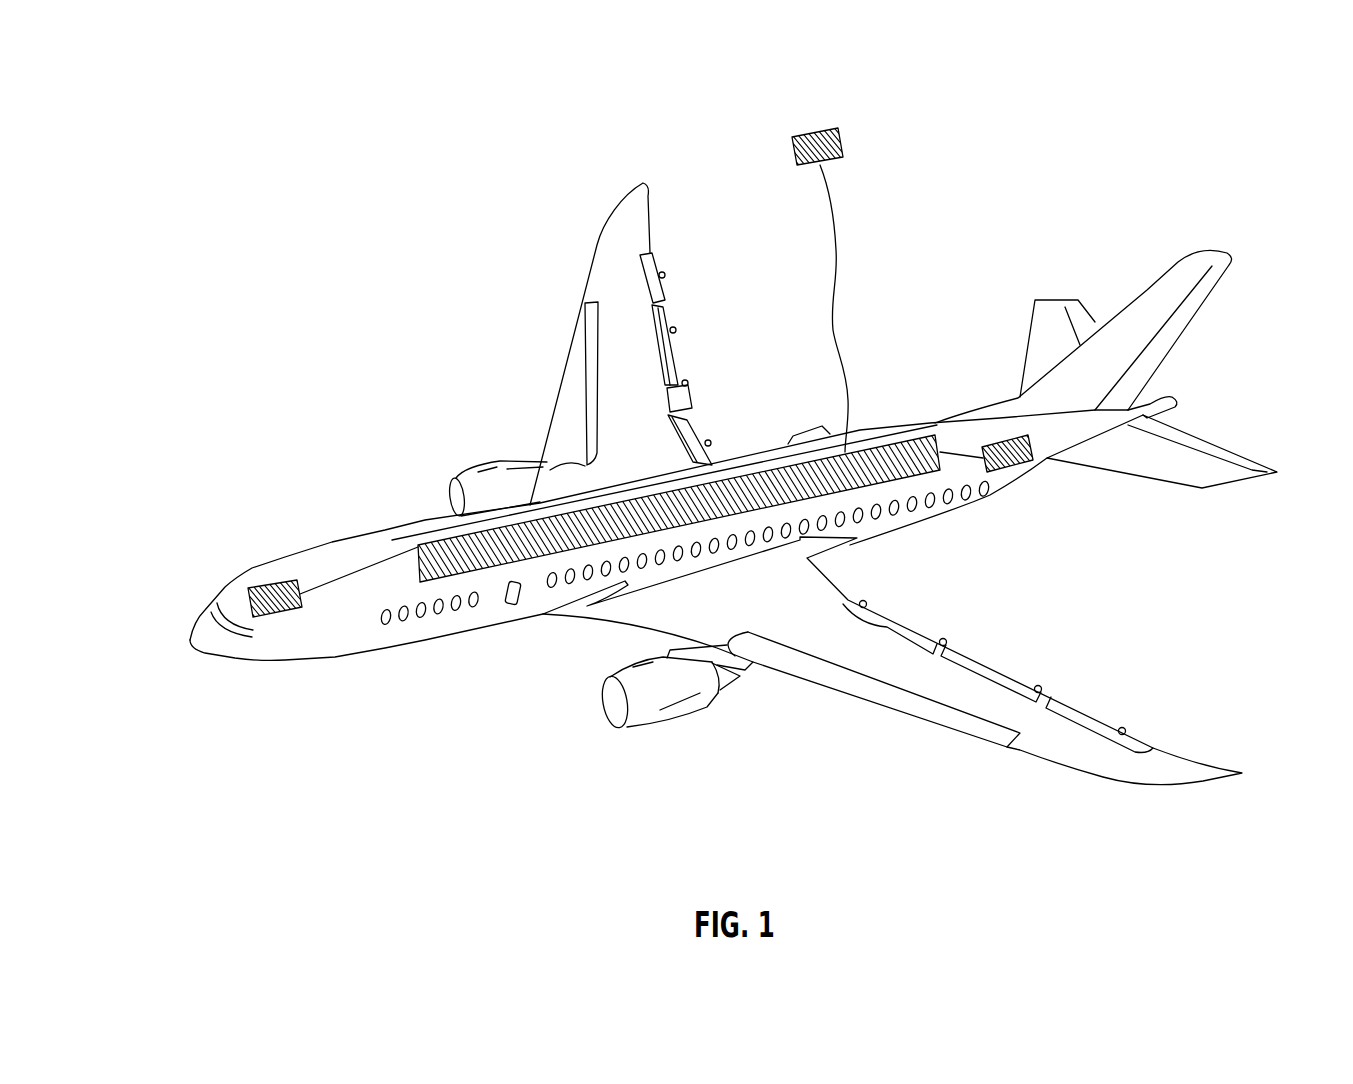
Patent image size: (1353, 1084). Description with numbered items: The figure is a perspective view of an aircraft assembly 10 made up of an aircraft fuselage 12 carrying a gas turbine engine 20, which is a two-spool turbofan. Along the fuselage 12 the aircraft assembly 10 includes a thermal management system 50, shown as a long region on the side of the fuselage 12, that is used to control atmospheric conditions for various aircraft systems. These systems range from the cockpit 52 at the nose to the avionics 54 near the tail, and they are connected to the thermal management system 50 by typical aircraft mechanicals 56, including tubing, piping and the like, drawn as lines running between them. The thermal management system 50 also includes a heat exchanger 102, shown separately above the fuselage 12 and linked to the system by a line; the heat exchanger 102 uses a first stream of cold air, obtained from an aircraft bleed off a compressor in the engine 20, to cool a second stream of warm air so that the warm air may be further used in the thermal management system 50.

The aircraft assembly 10 is at (190, 92).
The aircraft fuselage 12 is at (418, 525).
The gas turbine engine 20 is at (656, 712).
The thermal management system 50 is at (895, 440).
The cockpit 52 is at (250, 585).
The avionics 54 is at (1023, 471).
The aircraft mechanicals 56 is at (332, 543).
The heat exchanger 102 is at (797, 135).